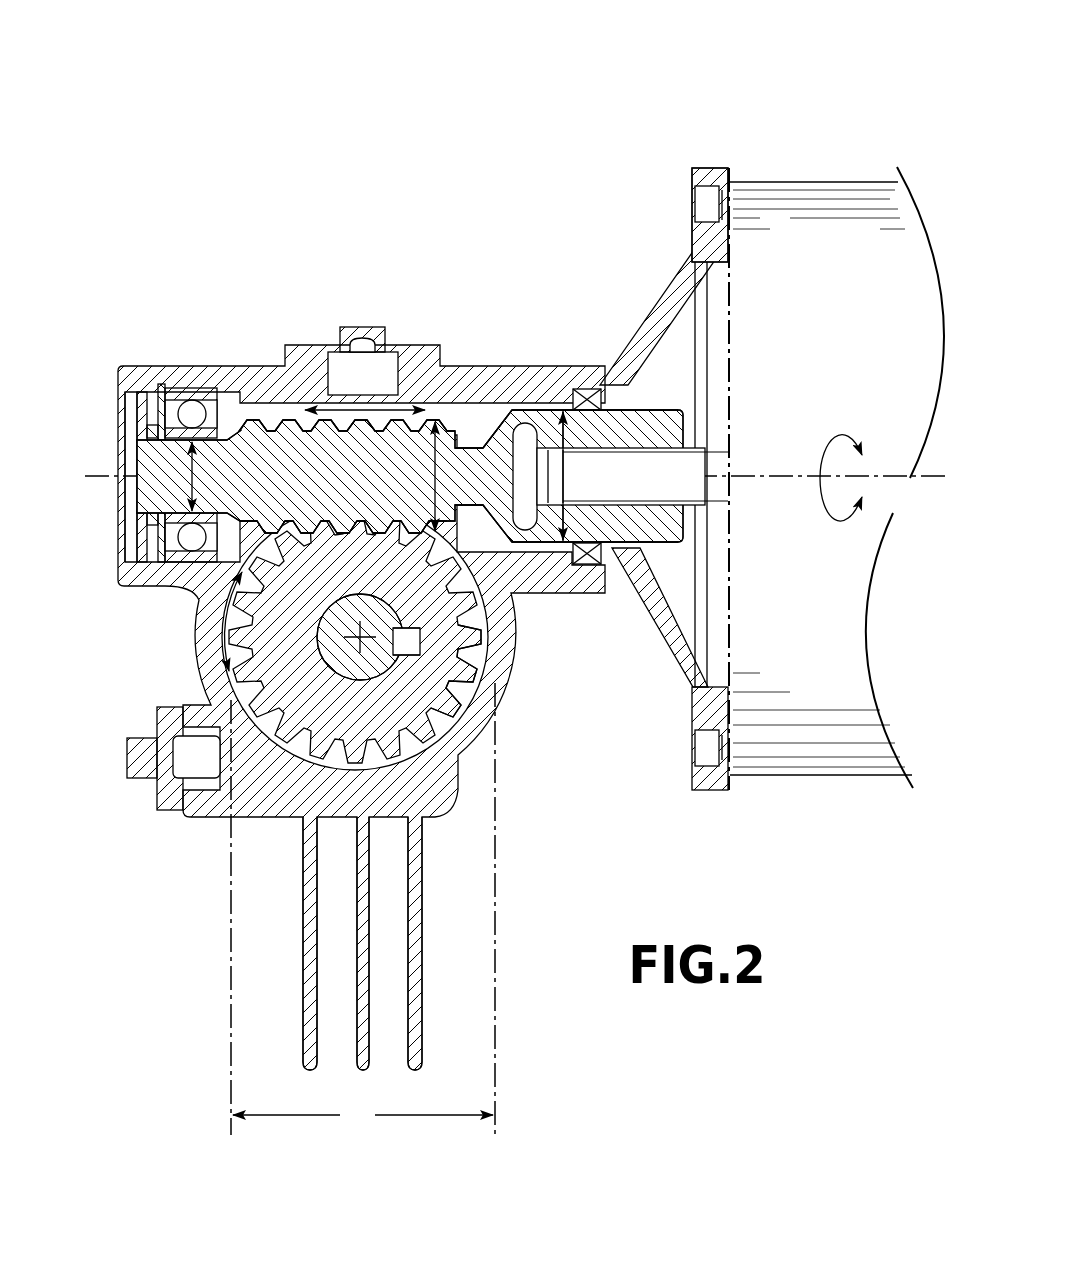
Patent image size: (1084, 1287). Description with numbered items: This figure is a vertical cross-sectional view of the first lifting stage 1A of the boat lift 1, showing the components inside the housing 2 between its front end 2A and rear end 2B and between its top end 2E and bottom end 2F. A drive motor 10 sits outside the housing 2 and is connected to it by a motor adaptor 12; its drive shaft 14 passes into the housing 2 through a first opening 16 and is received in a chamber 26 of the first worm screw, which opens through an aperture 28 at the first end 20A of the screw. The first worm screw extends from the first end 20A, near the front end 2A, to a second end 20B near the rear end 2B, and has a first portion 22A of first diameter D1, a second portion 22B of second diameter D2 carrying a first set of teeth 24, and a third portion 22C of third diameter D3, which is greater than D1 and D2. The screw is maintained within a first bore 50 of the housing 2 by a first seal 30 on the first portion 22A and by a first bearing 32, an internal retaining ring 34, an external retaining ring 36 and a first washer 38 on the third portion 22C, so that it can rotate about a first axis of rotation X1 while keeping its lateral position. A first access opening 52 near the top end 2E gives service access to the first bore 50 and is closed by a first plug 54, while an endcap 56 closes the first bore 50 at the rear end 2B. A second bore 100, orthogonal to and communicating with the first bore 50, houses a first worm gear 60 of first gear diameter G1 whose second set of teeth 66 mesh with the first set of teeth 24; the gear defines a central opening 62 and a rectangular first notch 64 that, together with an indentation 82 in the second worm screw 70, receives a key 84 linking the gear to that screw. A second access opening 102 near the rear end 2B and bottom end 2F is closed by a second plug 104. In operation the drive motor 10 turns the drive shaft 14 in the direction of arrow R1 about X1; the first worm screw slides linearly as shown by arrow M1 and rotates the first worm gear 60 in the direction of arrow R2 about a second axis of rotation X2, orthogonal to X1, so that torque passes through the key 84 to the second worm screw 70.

The boat lift 1 is at (618, 78).
The first lifting stage 1A is at (288, 298).
The housing 2 is at (451, 673).
The front end 2A is at (897, 595).
The rear end 2B is at (100, 385).
The top end 2E is at (372, 212).
The bottom end 2F is at (553, 1130).
The drive motor 10 is at (806, 172).
The motor adaptor 12 is at (664, 479).
The drive shaft 14 is at (714, 492).
The first opening 16 is at (624, 598).
The first end 20A is at (688, 427).
The second end 20B is at (451, 408).
The first portion 22A is at (655, 395).
The second portion 22B is at (453, 416).
The third portion 22C is at (220, 448).
The first set of teeth 24 is at (293, 425).
The chamber 26 is at (697, 512).
The aperture 28 is at (690, 460).
The first seal 30 is at (585, 566).
The first bearing 32 is at (183, 385).
The internal retaining ring 34 is at (147, 428).
The external retaining ring 36 is at (150, 530).
The first washer 38 is at (160, 392).
The first bore 50 is at (482, 415).
The first access opening 52 is at (373, 324).
The first plug 54 is at (362, 328).
The endcap 56 is at (135, 500).
The first worm gear 60 is at (424, 651).
The central opening 62 is at (385, 646).
The first notch 64 is at (416, 630).
The second set of teeth 66 is at (486, 648).
The second worm screw 70 is at (324, 684).
The indentation 82 is at (405, 624).
The key 84 is at (418, 654).
The second bore 100 is at (452, 800).
The second access opening 102 is at (252, 768).
The second plug 104 is at (126, 758).
The first diameter D1 is at (581, 476).
The second diameter D2 is at (454, 476).
The third diameter D3 is at (210, 476).
The first gear diameter G1 is at (363, 912).
The linear movement arrow M1 is at (348, 404).
The first direction of rotation R1 is at (828, 538).
The rotational movement of first worm gear R2 is at (212, 612).
The first axis of rotation X1 is at (880, 478).
The second axis of rotation X2 is at (352, 628).